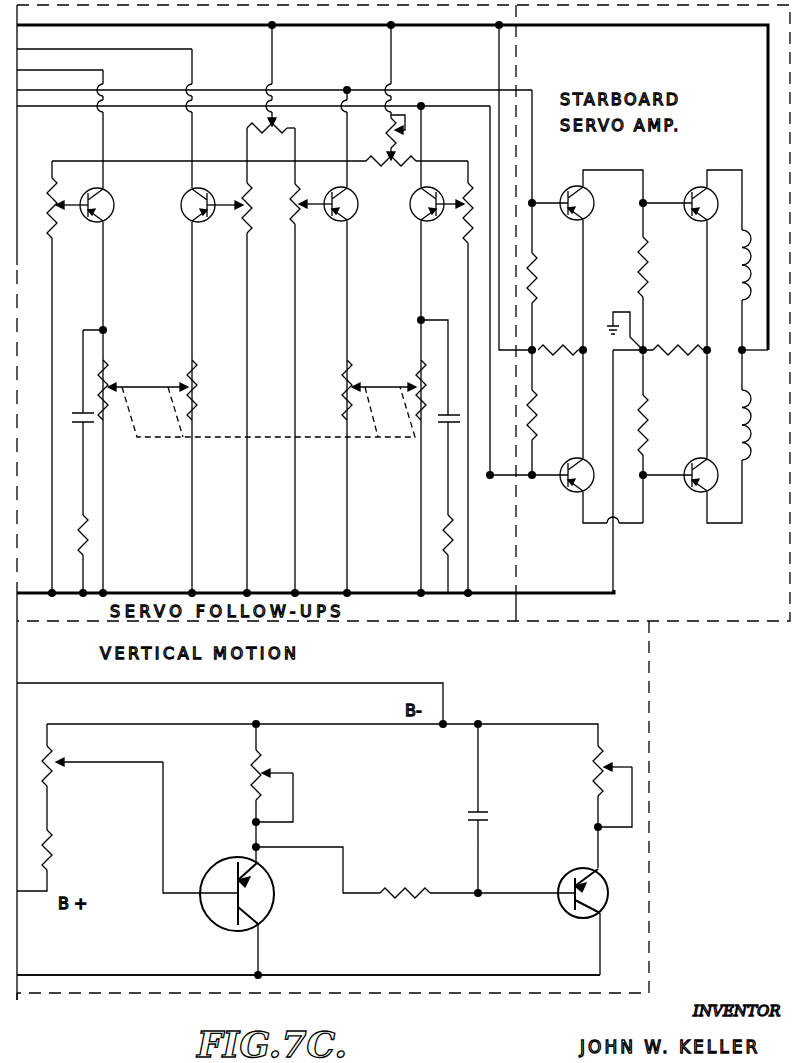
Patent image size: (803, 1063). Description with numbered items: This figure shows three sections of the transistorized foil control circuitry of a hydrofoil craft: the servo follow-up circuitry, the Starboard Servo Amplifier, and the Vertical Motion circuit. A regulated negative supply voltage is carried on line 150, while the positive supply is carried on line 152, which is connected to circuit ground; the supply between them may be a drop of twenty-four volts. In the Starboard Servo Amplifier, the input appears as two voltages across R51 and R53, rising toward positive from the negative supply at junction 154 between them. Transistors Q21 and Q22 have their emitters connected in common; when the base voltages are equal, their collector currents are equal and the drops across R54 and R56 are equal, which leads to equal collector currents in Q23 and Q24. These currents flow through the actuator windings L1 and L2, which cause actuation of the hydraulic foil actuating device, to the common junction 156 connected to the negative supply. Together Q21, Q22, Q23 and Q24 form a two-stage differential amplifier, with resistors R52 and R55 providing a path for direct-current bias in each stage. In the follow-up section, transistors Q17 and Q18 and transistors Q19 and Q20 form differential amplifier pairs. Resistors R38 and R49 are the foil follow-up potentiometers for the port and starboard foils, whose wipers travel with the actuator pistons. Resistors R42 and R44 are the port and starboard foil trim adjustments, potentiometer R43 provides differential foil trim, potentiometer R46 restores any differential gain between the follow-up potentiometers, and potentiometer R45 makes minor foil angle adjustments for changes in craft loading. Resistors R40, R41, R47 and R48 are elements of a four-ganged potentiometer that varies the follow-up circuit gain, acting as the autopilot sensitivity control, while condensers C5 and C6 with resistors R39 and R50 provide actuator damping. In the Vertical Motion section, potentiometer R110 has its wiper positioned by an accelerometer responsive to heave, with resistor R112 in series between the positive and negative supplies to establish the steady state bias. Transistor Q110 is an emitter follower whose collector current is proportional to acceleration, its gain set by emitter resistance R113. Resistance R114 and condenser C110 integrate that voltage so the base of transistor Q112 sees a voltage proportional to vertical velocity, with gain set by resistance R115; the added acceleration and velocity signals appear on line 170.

The line 150 is at (640, 26).
The line 152 is at (542, 592).
The junction 154 is at (535, 347).
The common junction 156 is at (741, 354).
The line 170 is at (191, 975).
The transistor Q17 is at (104, 200).
The transistor Q18 is at (196, 213).
The transistor Q19 is at (344, 209).
The transistor Q20 is at (419, 203).
The transistor Q21 is at (587, 195).
The transistor Q22 is at (563, 469).
The transistor Q23 is at (692, 200).
The transistor Q24 is at (680, 493).
The foil follow-up potentiometer R38 is at (38, 208).
The resistor R39 is at (88, 538).
The potentiometer element R40 is at (122, 390).
The potentiometer element R41 is at (211, 390).
The port foil trim adjustment R42 is at (229, 216).
The differential foil trim potentiometer R43 is at (271, 138).
The starboard foil trim adjustment R44 is at (314, 220).
The foil trimming potentiometer R45 is at (378, 137).
The potentiometer R46 is at (391, 173).
The potentiometer element R47 is at (328, 390).
The potentiometer element R48 is at (400, 390).
The foil follow-up potentiometer R49 is at (453, 216).
The resistor R50 is at (447, 540).
The resistor R51 is at (549, 278).
The resistor R52 is at (560, 362).
The resistor R53 is at (549, 415).
The resistor R54 is at (661, 267).
The resistor R55 is at (675, 340).
The resistor R56 is at (662, 425).
The condenser C5 is at (77, 411).
The condenser C6 is at (447, 418).
The actuator winding L1 is at (732, 265).
The actuator winding L2 is at (732, 425).
The potentiometer R110 is at (102, 762).
The resistor R112 is at (73, 850).
The emitter resistance R113 is at (249, 775).
The resistance R114 is at (405, 910).
The resistance R115 is at (583, 771).
The condenser C110 is at (453, 808).
The transistor Q110 is at (235, 885).
The transistor Q112 is at (565, 901).